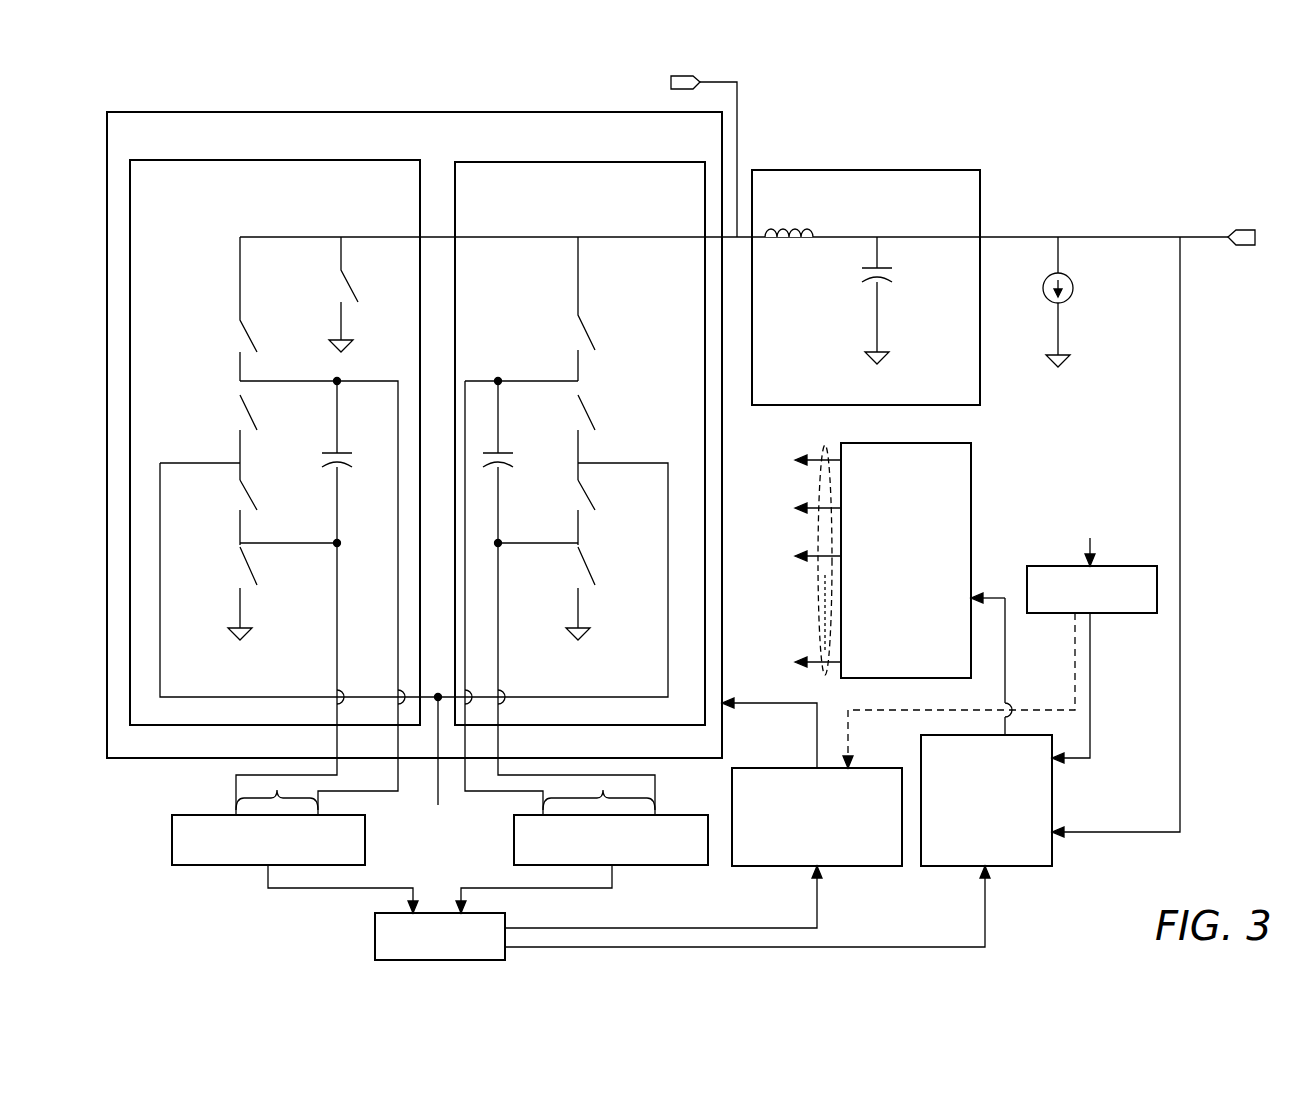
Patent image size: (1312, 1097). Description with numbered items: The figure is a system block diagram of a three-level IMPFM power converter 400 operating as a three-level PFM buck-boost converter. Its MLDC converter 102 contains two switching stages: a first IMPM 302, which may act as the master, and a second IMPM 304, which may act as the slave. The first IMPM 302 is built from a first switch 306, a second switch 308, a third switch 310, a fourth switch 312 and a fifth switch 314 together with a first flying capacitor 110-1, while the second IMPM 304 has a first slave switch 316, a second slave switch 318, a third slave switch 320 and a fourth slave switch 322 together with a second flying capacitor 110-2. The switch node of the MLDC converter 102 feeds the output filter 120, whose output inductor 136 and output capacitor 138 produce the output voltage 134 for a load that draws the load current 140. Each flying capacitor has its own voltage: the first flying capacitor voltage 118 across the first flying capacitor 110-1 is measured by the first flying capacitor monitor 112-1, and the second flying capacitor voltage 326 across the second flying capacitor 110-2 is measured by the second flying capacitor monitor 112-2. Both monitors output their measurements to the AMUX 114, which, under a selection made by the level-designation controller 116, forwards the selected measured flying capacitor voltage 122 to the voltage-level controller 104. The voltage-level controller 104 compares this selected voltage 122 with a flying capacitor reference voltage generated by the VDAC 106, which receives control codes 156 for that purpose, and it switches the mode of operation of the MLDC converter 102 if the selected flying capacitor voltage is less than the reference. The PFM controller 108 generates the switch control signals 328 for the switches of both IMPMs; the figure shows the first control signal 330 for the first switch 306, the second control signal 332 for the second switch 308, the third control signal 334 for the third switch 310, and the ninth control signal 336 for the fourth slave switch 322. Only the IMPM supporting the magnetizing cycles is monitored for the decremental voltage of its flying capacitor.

The multi-level DC-DC converter system 400 is at (940, 108).
The MLDC converter 102 is at (667, 463).
The first IMPM 302 is at (679, 487).
The second IMPM 304 is at (580, 488).
The first switch 306 is at (253, 333).
The second switch 308 is at (240, 414).
The third switch 310 is at (256, 507).
The fourth switch 312 is at (256, 585).
The fifth switch 314 is at (354, 282).
The first slave switch 316 is at (590, 328).
The second slave switch 318 is at (590, 408).
The third slave switch 320 is at (590, 503).
The fourth slave switch 322 is at (590, 582).
The first flying capacitor 110-1 is at (326, 452).
The second flying capacitor 110-2 is at (513, 452).
The first flying capacitor voltage 118 is at (190, 783).
The second flying capacitor voltage 326 is at (603, 790).
The VCF_1 monitor 112-1 is at (268, 840).
The VCF_2 monitor 112-2 is at (611, 840).
The analog multiplexer 114 is at (440, 936).
The selected measured flying capacitor voltage 122 is at (968, 914).
The level-designation controller 116 is at (817, 817).
The voltage-level controller 104 is at (986, 800).
The voltage digital-to-analog converter 106 is at (1092, 589).
The control codes 156 is at (1090, 515).
The PFM controller 108 is at (906, 560).
The switch control signals 328 is at (826, 447).
The first control signal 330 is at (799, 464).
The second control signal 332 is at (799, 512).
The third control signal 334 is at (799, 560).
The ninth control signal 336 is at (798, 662).
The output filter 120 is at (866, 287).
The output inductor 136 is at (790, 245).
The output capacitor 138 is at (890, 267).
The load current 140 is at (1075, 278).
The output voltage 134 is at (1252, 236).